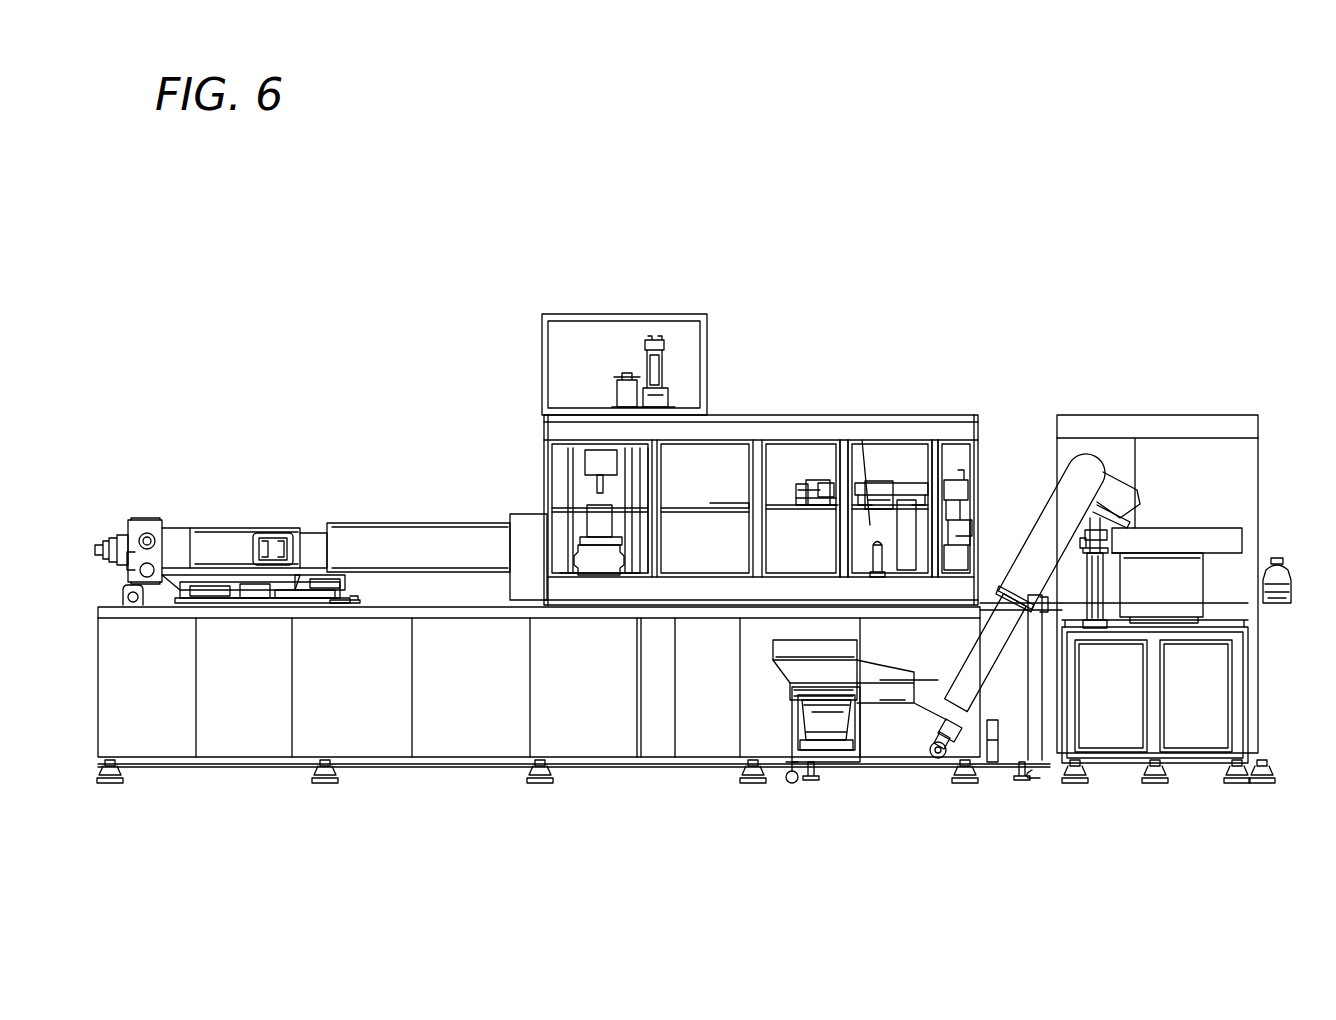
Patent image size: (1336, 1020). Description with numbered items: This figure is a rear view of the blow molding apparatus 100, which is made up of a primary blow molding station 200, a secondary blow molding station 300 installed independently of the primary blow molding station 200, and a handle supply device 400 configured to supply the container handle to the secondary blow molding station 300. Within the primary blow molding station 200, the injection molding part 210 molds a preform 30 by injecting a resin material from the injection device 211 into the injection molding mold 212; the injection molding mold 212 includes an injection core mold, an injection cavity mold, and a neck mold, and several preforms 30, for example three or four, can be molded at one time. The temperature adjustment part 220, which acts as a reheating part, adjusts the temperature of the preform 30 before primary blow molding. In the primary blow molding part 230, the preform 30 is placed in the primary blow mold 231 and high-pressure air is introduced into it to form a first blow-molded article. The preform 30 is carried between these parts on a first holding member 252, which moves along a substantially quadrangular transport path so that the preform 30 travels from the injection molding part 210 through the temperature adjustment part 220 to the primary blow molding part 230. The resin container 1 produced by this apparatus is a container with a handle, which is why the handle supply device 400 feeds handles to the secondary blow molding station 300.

The blow molding apparatus 100 is at (251, 236).
The primary blow molding station 200 is at (781, 292).
The secondary blow molding station 300 is at (1165, 288).
The handle supply device 400 is at (1197, 492).
The injection molding part 210 is at (592, 388).
The injection device 211 is at (470, 540).
The injection molding mold 212 is at (594, 480).
The temperature adjustment part 220 is at (779, 493).
The primary blow molding part 230 is at (881, 478).
The primary blow mold 231 is at (842, 470).
The preform 30 is at (862, 399).
The first holding member 252 is at (875, 578).
The resin container 1 is at (1283, 560).